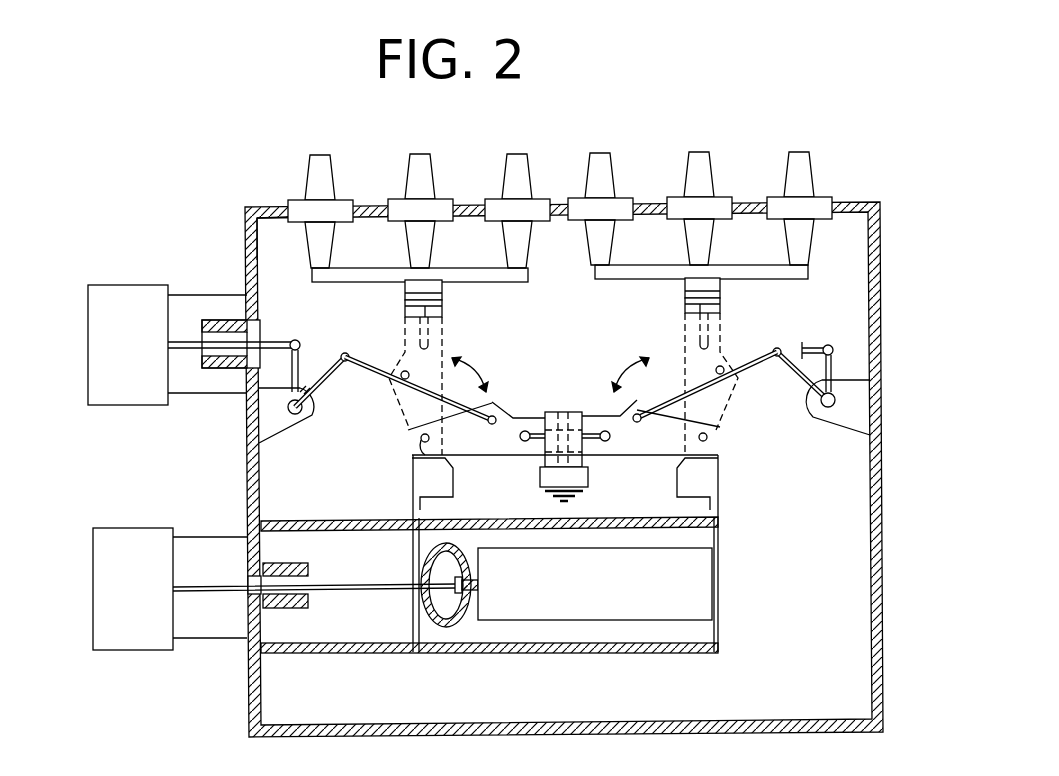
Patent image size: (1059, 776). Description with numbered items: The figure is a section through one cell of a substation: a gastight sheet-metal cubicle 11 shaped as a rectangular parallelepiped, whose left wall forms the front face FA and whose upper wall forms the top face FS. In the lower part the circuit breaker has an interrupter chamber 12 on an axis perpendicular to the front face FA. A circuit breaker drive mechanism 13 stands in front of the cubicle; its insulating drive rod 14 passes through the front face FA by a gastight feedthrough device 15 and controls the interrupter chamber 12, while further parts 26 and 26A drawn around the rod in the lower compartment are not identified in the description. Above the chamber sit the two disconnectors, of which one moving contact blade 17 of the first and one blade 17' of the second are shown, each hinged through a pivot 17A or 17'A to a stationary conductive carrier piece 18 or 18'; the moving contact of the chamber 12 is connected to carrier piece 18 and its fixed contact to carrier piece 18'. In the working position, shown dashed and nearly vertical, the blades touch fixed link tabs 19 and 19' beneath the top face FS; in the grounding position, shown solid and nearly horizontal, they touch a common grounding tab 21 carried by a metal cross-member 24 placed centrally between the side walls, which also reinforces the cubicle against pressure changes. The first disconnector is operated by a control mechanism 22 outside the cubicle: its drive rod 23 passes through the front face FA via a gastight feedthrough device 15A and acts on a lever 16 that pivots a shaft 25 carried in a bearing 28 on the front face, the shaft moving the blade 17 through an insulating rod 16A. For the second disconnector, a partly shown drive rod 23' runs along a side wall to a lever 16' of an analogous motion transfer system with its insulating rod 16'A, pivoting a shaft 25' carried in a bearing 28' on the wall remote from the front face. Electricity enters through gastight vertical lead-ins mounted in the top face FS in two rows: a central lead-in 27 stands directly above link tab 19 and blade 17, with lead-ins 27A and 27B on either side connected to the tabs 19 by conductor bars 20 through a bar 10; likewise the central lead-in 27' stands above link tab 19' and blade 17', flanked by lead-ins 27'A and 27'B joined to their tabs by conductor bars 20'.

The cubicle 11 is at (857, 205).
The top face FS is at (268, 207).
The front face FA is at (246, 231).
The electricity lead-in 27A is at (318, 249).
The electricity lead-in 27 is at (402, 211).
The electricity lead-in 27B is at (508, 249).
The electricity lead-in 27'A is at (586, 210).
The electricity lead-in 27' is at (684, 209).
The electricity lead-in 27'B is at (777, 209).
The bar 10 is at (525, 283).
The control mechanism 22 is at (121, 300).
The gastight feedthrough device 15A is at (212, 320).
The drive rod 23 is at (238, 335).
The shaft 25 is at (328, 405).
The bearing 28 is at (289, 432).
The lever 16 is at (322, 358).
The insulating rod 16A is at (366, 362).
The conductor bar 20 is at (396, 299).
The link tab 19 is at (453, 377).
The pivot 17A is at (420, 441).
The moving contact blade 17 is at (518, 400).
The moving contact blade 17' is at (599, 400).
The grounding tab 21 is at (583, 462).
The metal cross-member 24 is at (542, 480).
The carrier piece 18 is at (399, 553).
The carrier piece 18' is at (732, 553).
The conductor bar 20' is at (672, 297).
The link tab 19' is at (680, 376).
The lever 16' is at (779, 347).
The lever arm 16'A is at (709, 387).
The drive rod 23' is at (828, 338).
The shaft 25' is at (798, 423).
The bearing 28' is at (838, 438).
The pivot 17'A is at (712, 445).
The chamber partition 26 is at (338, 633).
The circuit breaker drive mechanism 13 is at (125, 540).
The gastight feedthrough device 15 is at (310, 567).
The drive rod 14 is at (216, 584).
The spring bellows 26A is at (507, 632).
The interrupter chamber 12 is at (720, 562).